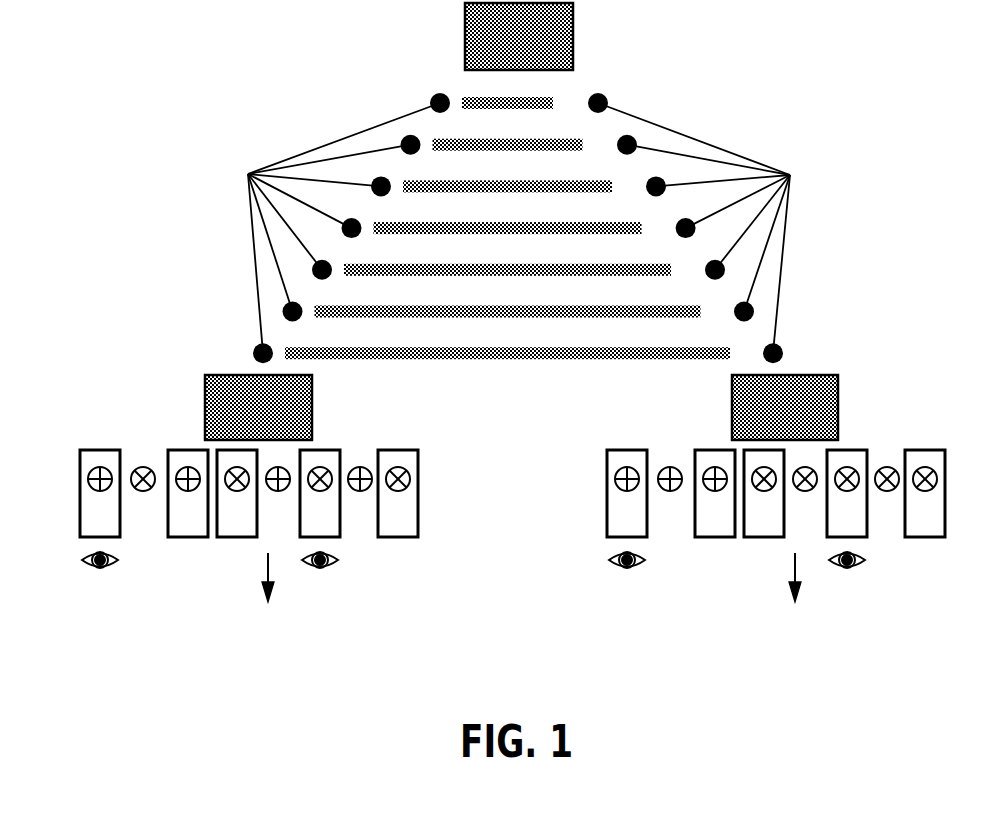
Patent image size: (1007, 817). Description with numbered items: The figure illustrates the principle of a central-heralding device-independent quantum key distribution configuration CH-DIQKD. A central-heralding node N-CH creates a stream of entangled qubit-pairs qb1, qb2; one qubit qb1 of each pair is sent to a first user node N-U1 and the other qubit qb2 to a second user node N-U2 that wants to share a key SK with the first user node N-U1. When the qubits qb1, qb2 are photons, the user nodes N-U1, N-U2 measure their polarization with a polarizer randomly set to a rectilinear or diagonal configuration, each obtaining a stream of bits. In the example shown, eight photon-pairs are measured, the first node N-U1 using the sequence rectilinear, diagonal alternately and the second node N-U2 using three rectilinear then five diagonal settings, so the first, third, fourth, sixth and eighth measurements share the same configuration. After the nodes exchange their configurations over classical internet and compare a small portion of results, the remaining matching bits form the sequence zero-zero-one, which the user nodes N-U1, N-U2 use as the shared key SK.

The central-heralding device-independent quantum key distribution configuration CH-DIQKD is at (206, 79).
The central-heralding node N-CH is at (575, 30).
The qubit qb1 is at (326, 228).
The qubit qb2 is at (714, 228).
The first user node N-U1 is at (205, 400).
The second user node N-U2 is at (838, 400).
The shared key SK is at (232, 628).